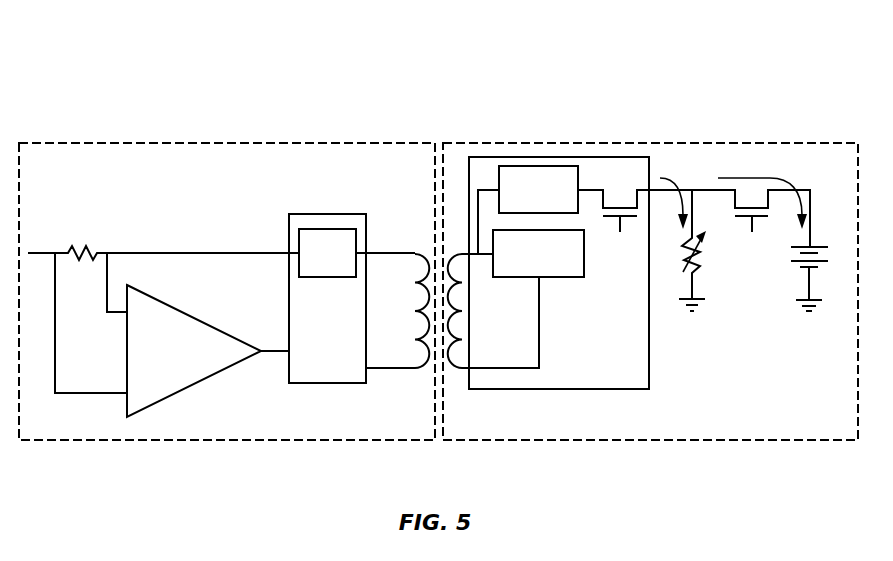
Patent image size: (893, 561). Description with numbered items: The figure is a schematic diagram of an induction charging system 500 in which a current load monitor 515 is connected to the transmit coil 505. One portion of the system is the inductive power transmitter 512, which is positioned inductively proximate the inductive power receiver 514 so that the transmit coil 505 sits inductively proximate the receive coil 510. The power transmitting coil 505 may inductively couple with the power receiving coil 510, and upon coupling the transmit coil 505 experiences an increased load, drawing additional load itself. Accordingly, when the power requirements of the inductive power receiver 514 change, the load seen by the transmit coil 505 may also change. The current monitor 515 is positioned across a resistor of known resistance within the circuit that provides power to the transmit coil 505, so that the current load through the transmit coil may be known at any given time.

The induction charging system 500 is at (75, 40).
The inductive power transmitter 512 is at (245, 143).
The inductive power receiver 514 is at (681, 143).
The current load monitor 515 is at (154, 405).
The transmit coil 505 is at (390, 370).
The receive coil 510 is at (458, 370).